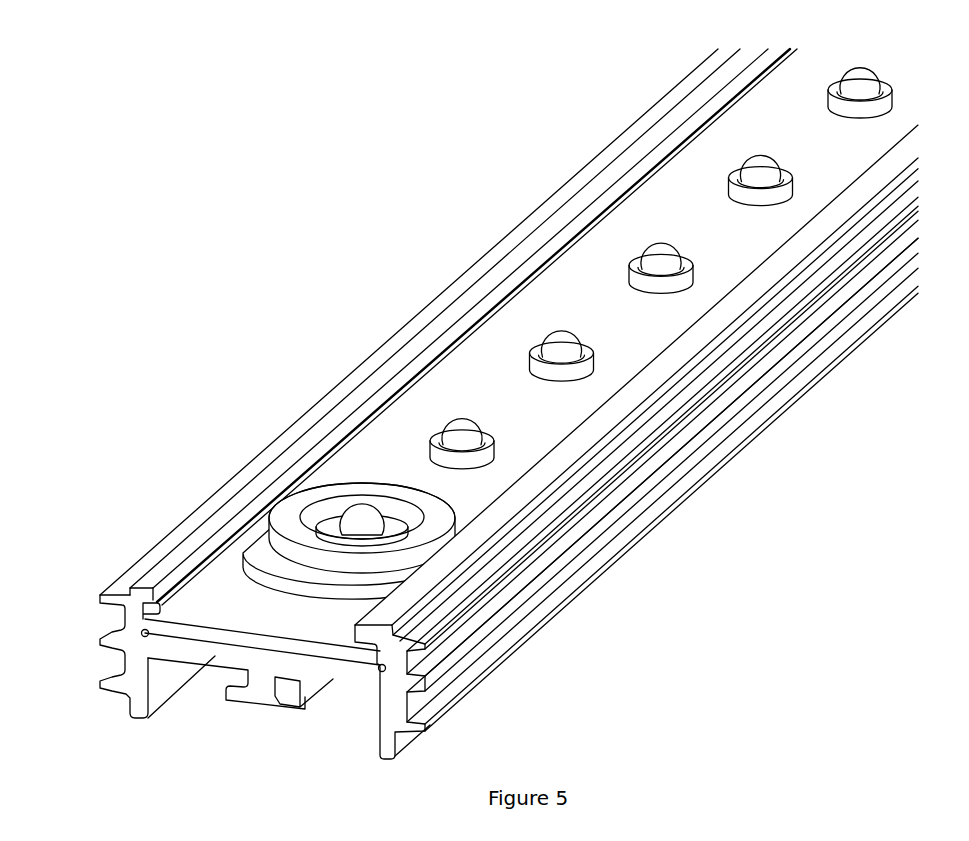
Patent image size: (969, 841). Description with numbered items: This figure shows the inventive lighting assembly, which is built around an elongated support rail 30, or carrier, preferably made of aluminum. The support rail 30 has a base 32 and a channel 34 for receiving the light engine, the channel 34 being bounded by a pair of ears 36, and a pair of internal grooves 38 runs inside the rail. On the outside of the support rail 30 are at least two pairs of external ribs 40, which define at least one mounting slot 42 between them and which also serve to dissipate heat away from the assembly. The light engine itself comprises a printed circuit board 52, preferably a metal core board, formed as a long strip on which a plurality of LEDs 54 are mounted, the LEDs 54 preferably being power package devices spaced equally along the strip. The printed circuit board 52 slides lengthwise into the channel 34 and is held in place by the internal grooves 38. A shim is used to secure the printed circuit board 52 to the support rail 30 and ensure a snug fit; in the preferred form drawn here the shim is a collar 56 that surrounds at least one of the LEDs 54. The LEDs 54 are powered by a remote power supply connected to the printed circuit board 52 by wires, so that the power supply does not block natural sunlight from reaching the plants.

The support rail 30 is at (217, 657).
The base 32 is at (185, 647).
The channel 34 is at (188, 622).
The ears 36 is at (365, 632).
The internal grooves 38 is at (375, 648).
The external ribs 40 is at (422, 655).
The mounting slot 42 is at (110, 619).
The printed circuit board 52 is at (217, 593).
The LEDs 54 is at (856, 82).
The collar 56 is at (268, 557).